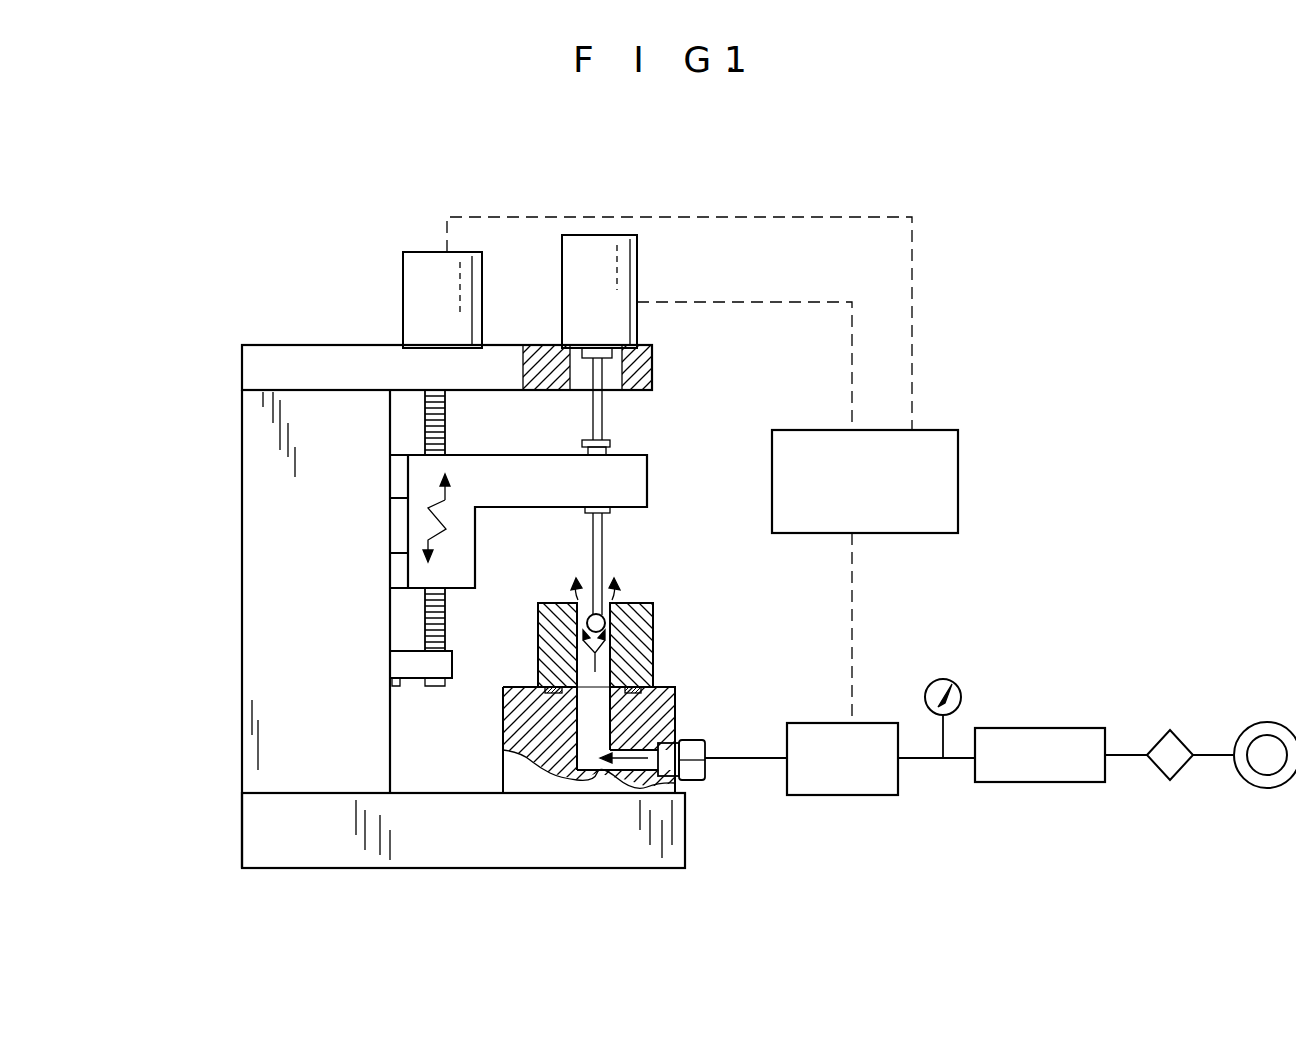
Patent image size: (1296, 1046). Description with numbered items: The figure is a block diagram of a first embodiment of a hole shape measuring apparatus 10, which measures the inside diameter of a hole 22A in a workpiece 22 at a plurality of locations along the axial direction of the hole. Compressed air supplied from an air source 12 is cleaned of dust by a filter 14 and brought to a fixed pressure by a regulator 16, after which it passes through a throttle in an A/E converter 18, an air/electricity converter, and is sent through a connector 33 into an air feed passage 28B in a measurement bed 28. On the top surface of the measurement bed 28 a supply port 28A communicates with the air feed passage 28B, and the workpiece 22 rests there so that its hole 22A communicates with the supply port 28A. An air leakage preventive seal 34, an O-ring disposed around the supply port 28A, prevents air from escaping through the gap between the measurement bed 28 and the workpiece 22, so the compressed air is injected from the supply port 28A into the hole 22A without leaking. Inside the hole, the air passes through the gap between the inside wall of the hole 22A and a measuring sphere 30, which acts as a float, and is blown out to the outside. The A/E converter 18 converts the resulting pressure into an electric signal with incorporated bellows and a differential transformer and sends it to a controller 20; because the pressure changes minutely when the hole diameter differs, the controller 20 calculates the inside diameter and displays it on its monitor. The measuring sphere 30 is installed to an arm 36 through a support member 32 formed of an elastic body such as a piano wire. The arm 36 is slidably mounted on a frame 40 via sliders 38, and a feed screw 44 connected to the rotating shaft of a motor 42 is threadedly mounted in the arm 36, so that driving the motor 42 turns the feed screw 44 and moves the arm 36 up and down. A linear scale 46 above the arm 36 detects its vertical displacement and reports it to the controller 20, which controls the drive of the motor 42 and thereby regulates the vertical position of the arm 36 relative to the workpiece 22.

The measuring apparatus 10 is at (966, 222).
The air source 12 is at (1292, 784).
The filter 14 is at (1175, 780).
The regulator 16 is at (1028, 784).
The A/E converter 18 is at (812, 722).
The controller 20 is at (958, 498).
The workpiece 22 is at (552, 622).
The hole 22A is at (607, 605).
The measurement bed 28 is at (515, 775).
The supply port 28A is at (600, 682).
The air feed passage 28B is at (590, 752).
The measuring sphere 30 is at (612, 630).
The support member 32 is at (598, 562).
The connector 33 is at (693, 778).
The air leakage preventive seal 34 is at (548, 693).
The arm 36 is at (647, 488).
The sliders 38 is at (395, 468).
The frame 40 is at (260, 607).
The motor 42 is at (415, 280).
The feed screw 44 is at (445, 432).
The linear scale 46 is at (637, 290).